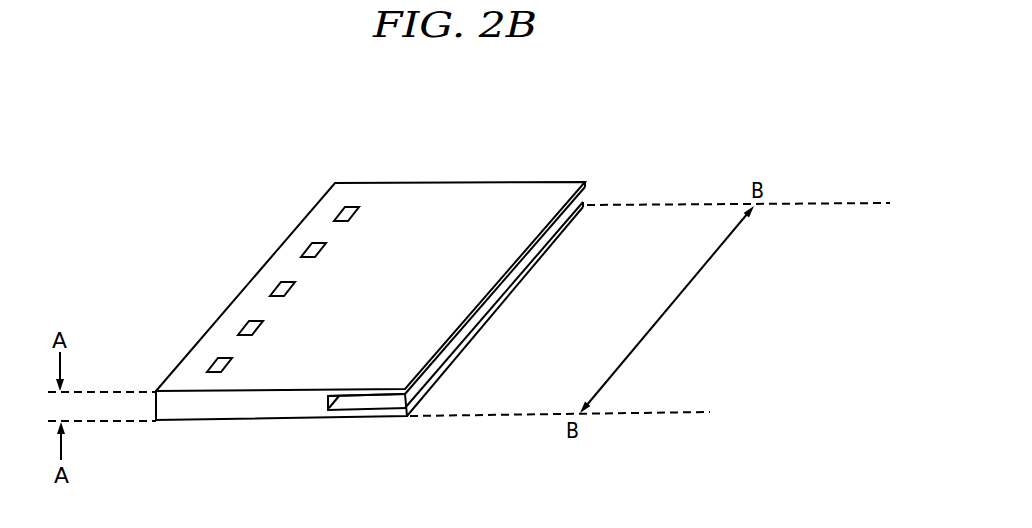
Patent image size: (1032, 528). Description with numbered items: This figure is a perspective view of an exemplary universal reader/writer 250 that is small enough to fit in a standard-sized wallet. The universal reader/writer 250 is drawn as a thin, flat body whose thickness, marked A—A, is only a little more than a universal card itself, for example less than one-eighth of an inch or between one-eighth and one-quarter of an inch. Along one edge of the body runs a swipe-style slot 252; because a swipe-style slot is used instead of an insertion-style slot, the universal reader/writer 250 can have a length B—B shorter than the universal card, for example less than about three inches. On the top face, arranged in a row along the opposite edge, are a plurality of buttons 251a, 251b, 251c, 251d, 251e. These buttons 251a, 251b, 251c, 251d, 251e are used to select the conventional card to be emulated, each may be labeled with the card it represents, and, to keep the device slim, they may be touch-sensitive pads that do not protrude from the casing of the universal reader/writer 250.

The universal reader/writer 250 is at (278, 149).
The button 251a is at (337, 213).
The button 251b is at (304, 250).
The button 251c is at (273, 289).
The button 251d is at (241, 328).
The button 251e is at (210, 365).
The swipe-style slot 252 is at (494, 306).